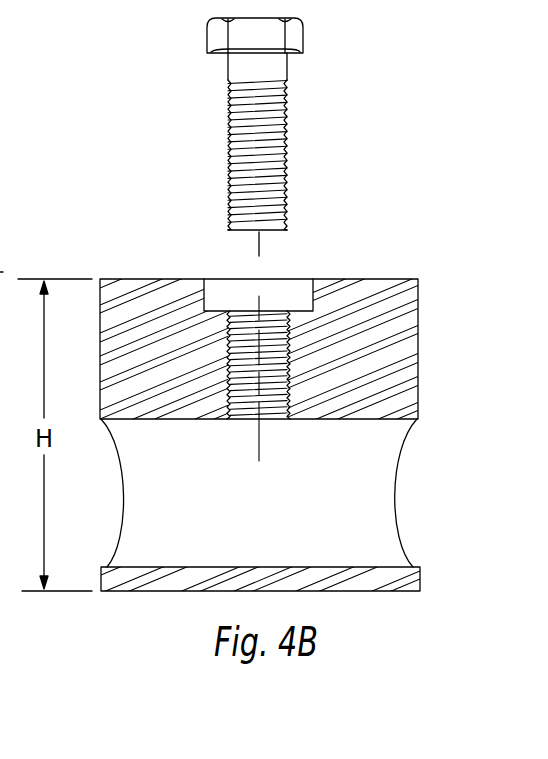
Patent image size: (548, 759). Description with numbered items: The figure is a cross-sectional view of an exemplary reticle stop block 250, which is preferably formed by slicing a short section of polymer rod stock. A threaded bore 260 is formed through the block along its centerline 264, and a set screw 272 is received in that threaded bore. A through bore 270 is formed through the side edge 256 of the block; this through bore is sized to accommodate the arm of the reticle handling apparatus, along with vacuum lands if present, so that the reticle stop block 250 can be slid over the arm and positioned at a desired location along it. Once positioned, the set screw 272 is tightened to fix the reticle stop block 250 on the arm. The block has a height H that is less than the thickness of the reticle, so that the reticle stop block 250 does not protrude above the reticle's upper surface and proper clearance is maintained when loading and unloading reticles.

The reticle stop block 250 is at (267, 429).
The side edge 256 is at (100, 300).
The threaded bore 260 is at (290, 332).
The centerline 264 is at (259, 246).
The through bore 270 is at (138, 565).
The set screw 272 is at (303, 37).